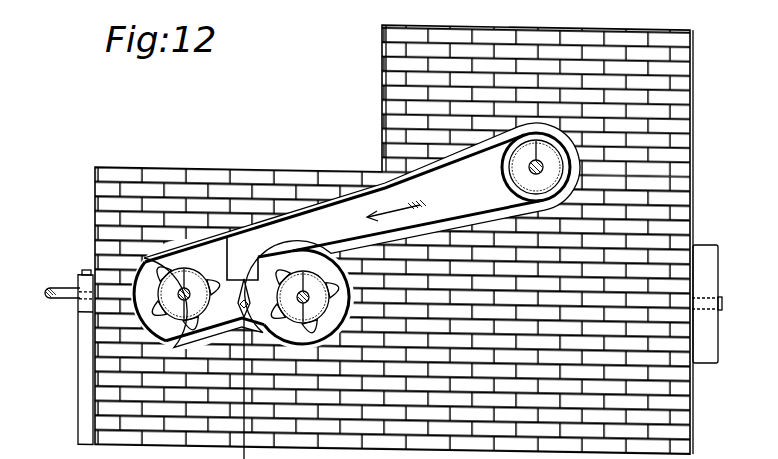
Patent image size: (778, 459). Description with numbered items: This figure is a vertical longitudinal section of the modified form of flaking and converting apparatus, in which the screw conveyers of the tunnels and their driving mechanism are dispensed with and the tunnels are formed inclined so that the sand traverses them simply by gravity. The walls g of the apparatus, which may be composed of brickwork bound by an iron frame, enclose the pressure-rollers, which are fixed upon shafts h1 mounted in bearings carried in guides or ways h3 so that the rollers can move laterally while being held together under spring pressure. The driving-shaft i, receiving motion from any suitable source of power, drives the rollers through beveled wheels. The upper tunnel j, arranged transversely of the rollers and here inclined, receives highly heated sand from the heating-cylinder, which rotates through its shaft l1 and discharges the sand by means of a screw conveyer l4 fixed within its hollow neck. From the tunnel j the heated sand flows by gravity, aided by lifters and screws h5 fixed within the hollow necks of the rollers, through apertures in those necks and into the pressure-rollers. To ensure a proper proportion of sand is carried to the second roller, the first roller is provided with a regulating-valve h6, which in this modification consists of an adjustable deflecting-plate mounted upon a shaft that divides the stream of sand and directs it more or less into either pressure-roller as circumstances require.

The walls g is at (110, 348).
The guides or ways h3 is at (84, 272).
The driving-shaft i is at (57, 287).
The tunnel j is at (350, 203).
The screws h5 is at (182, 290).
The shafts h1 is at (181, 280).
The regulating-valve h6 is at (182, 320).
The shaft l1 is at (562, 155).
The screw conveyer l4 is at (541, 163).